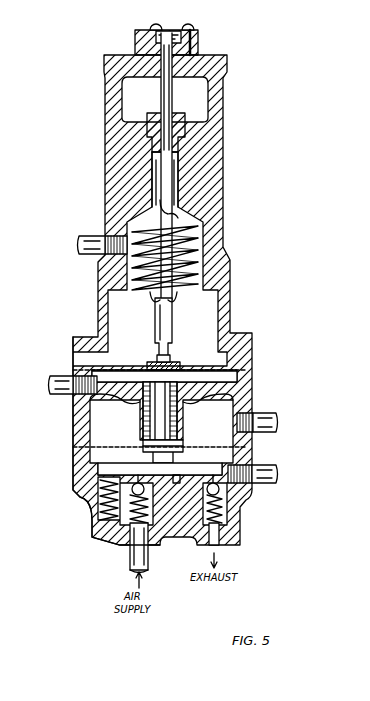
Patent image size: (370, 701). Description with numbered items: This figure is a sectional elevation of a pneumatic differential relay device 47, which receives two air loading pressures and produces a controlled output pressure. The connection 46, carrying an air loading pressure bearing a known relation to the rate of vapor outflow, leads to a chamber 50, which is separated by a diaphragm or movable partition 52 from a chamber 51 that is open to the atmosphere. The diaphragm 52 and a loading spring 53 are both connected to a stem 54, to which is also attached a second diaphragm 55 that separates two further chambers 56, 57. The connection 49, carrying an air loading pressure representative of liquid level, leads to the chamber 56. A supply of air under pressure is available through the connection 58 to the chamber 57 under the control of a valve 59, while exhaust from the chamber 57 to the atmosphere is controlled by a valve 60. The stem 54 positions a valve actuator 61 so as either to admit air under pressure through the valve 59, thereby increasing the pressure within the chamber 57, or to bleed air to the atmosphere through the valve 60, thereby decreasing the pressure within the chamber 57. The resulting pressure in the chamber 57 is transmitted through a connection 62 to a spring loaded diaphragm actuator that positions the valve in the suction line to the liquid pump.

The connection 46 is at (90, 234).
The differential relay device 47 is at (223, 123).
The connection 49 is at (259, 413).
The chamber 50 is at (174, 324).
The chamber 51 is at (164, 378).
The diaphragm or movable partition 52 is at (110, 368).
The loading spring 53 is at (226, 249).
The stem 54 is at (184, 430).
The diaphragm 55 is at (90, 446).
The chamber 56 is at (161, 409).
The chamber 57 is at (160, 467).
The connection 58 is at (128, 554).
The valve 59 is at (126, 488).
The valve 60 is at (246, 506).
The valve actuator 61 is at (97, 470).
The connection 62 is at (268, 466).